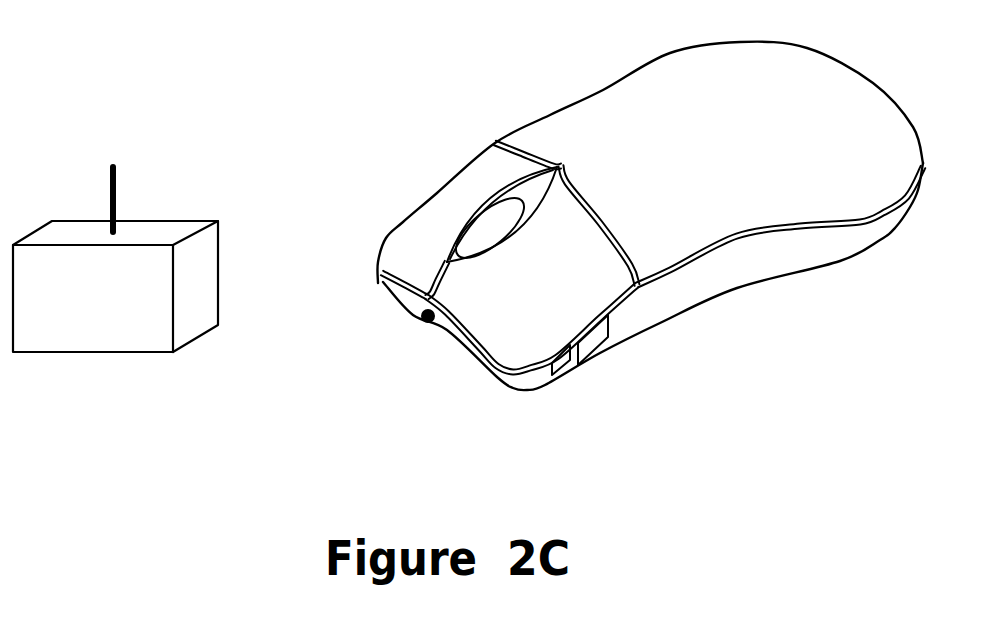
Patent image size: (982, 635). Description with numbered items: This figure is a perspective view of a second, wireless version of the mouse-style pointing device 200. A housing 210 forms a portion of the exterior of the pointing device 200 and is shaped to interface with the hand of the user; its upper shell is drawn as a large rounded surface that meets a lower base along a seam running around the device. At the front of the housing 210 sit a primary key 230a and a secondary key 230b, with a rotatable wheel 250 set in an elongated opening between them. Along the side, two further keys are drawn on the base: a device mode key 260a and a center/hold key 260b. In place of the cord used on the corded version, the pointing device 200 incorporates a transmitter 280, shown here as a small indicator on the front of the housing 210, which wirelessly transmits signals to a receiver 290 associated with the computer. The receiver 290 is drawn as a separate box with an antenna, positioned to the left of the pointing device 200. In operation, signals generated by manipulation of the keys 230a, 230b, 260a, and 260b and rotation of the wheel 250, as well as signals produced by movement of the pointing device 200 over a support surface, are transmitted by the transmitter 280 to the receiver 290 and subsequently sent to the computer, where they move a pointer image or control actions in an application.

The pointing device 200 is at (402, 198).
The housing 210 is at (760, 57).
The primary key 230a is at (510, 343).
The secondary key 230b is at (413, 237).
The rotatable wheel 250 is at (503, 220).
The device mode key 260a is at (565, 362).
The center/hold key 260b is at (588, 342).
The transmitter 280 is at (428, 323).
The receiver 290 is at (138, 343).